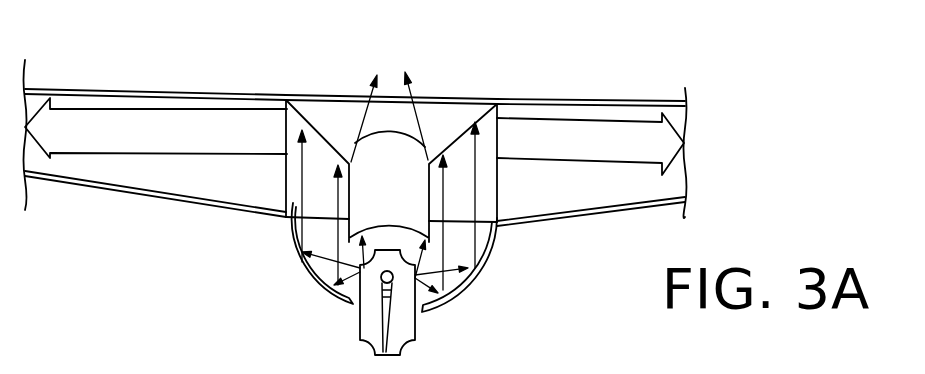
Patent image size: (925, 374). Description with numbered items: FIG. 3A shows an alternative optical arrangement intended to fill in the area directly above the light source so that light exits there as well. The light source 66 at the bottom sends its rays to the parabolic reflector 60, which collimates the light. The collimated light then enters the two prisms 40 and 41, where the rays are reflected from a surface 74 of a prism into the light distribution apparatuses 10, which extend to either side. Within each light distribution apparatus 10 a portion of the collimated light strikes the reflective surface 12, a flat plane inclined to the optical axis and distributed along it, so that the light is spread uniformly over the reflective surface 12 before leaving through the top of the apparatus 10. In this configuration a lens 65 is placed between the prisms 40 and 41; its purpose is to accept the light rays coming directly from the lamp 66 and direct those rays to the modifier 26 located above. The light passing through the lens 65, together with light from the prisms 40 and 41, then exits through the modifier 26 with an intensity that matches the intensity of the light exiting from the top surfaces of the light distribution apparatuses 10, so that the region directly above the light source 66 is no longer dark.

The light distribution apparatus 10 is at (74, 72).
The reflective surface 12 is at (192, 208).
The modifier 26 is at (472, 100).
The prism 40 is at (281, 218).
The prism 41 is at (463, 201).
The parabolic reflector 60 is at (315, 275).
The lens 65 is at (395, 155).
The light source 66 is at (390, 303).
The surface 74 is at (362, 122).